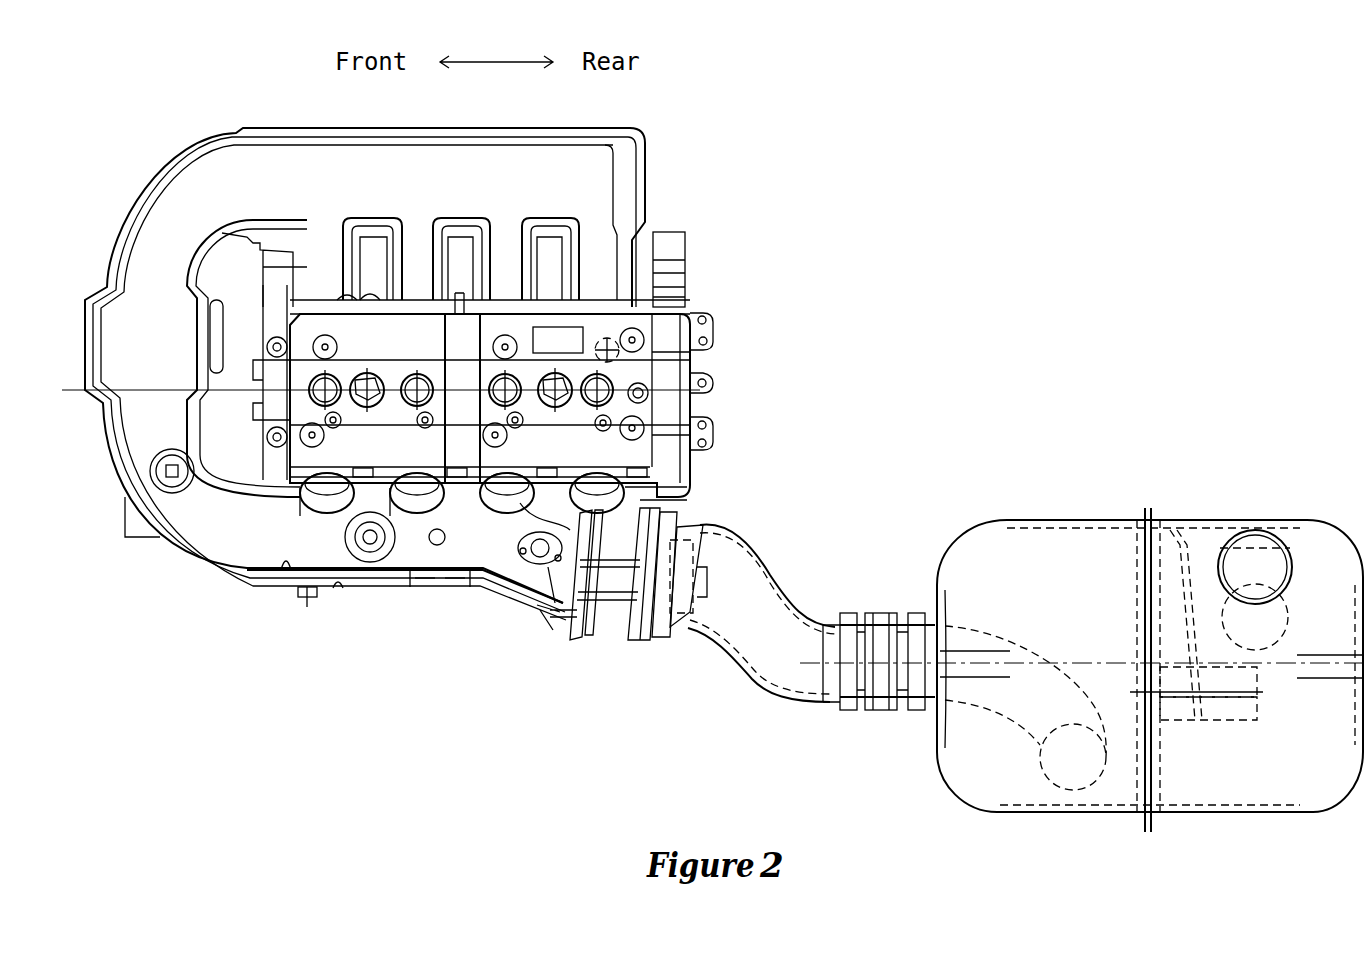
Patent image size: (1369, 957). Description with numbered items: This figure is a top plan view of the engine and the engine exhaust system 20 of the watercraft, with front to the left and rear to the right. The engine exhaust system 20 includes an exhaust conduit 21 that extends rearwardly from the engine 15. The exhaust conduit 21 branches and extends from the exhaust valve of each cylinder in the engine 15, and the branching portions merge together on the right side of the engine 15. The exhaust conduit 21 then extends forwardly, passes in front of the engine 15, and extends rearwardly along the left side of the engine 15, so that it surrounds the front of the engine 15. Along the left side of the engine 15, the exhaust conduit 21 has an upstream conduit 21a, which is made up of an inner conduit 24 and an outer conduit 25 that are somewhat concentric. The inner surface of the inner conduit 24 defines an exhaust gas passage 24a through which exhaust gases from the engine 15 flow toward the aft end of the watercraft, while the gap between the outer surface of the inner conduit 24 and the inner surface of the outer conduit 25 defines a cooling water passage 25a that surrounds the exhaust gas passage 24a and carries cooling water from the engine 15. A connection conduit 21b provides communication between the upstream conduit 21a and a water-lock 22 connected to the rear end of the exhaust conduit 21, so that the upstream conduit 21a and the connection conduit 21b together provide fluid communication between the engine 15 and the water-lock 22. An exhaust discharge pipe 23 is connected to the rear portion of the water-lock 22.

The engine 15 is at (690, 297).
The engine exhaust system 20 is at (387, 676).
The exhaust conduit 21 is at (261, 568).
The upstream conduit 21a is at (440, 623).
The connection conduit 21b is at (773, 658).
The water-lock 22 is at (980, 540).
The exhaust discharge pipe 23 is at (1253, 545).
The inner conduit 24 is at (423, 570).
The outer conduit 25 is at (453, 582).
The exhaust gas passage 24a is at (287, 568).
The cooling water passage 25a is at (338, 586).